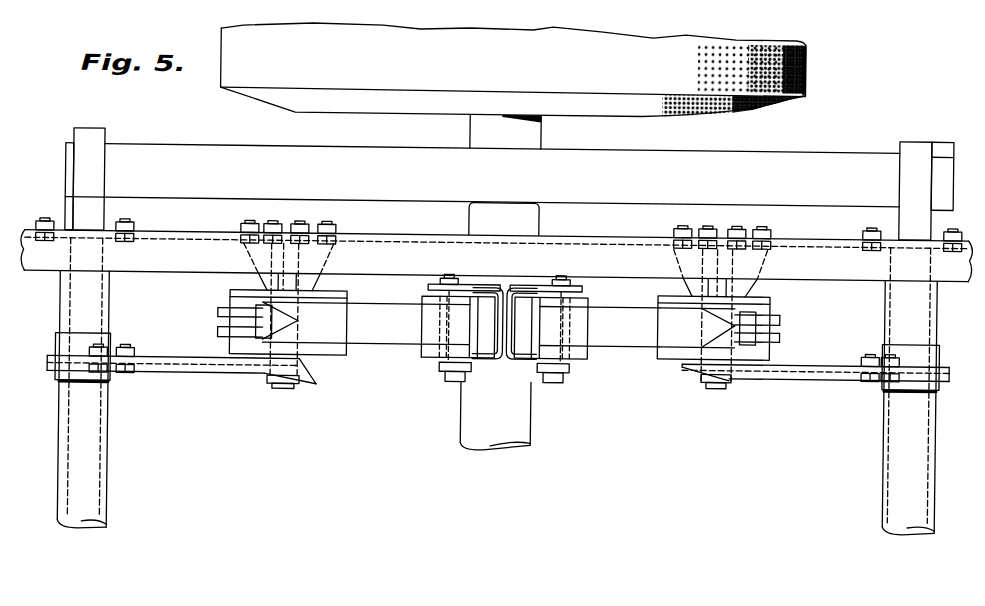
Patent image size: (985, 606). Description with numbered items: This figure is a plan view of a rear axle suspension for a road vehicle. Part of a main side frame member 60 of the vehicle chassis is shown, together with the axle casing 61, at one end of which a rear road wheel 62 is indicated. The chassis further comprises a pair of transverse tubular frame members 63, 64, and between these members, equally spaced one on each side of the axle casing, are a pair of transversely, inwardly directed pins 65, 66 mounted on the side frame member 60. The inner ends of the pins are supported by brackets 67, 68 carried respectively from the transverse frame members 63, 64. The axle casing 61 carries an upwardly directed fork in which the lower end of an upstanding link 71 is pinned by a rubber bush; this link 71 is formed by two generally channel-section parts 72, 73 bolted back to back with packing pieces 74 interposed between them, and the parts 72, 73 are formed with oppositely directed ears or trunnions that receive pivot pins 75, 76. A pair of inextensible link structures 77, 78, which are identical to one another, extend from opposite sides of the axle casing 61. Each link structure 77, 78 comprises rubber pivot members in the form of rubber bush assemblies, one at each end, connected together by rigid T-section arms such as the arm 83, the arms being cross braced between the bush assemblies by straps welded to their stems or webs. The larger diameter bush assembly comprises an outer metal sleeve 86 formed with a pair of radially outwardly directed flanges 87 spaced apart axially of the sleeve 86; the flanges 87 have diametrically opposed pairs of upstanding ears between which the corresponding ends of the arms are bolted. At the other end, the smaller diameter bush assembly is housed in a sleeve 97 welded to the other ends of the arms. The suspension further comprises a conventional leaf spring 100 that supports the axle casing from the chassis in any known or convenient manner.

The main side frame member 60 is at (165, 262).
The axle casing 61 is at (478, 287).
The rear road wheel 62 is at (804, 68).
The transverse tubular frame member 63 is at (97, 457).
The transverse tubular frame member 64 is at (897, 436).
The pin 65 is at (320, 295).
The pin 66 is at (678, 295).
The bracket 67 is at (221, 378).
The bracket 68 is at (831, 374).
The upstanding link 71 is at (577, 285).
The channel-section part 72 is at (446, 350).
The channel-section part 73 is at (550, 351).
The packing pieces 74 is at (503, 362).
The pivot pin 75 is at (452, 326).
The pivot pin 76 is at (555, 324).
The link structure 77 is at (405, 340).
The link structure 78 is at (641, 340).
The T-section arm 83 is at (384, 334).
The outer metal sleeve 86 is at (346, 359).
The flanges 87 is at (220, 319).
The sleeve 97 is at (438, 374).
The leaf spring 100 is at (802, 163).